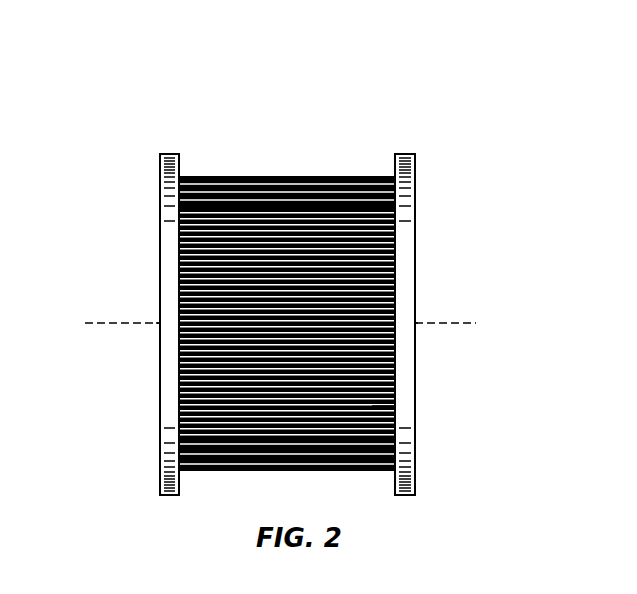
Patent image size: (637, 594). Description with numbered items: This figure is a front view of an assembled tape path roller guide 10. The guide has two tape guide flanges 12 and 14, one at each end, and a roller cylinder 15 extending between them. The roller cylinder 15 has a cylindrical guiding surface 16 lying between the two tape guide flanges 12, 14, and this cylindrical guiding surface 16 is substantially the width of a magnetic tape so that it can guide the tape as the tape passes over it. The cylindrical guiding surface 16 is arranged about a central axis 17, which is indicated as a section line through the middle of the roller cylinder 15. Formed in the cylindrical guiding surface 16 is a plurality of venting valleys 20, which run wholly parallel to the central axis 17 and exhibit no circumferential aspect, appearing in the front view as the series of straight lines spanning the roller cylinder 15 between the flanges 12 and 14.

The tape path roller guide 10 is at (360, 80).
The tape guide flange 12 is at (157, 146).
The tape guide flange 14 is at (404, 146).
The roller cylinder 15 is at (210, 466).
The cylindrical guiding surface 16 is at (383, 154).
The central axis 17 is at (89, 312).
The venting valley 20 is at (366, 315).